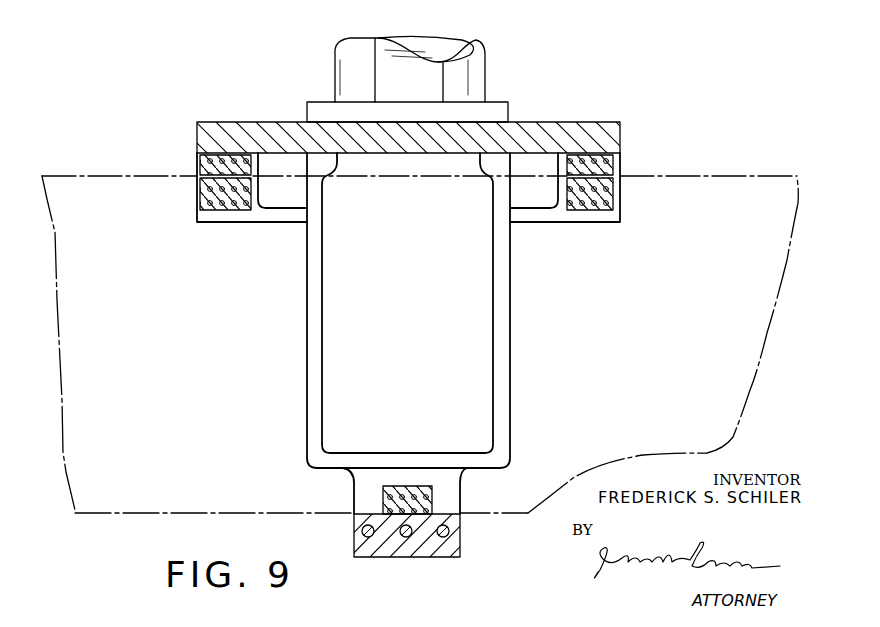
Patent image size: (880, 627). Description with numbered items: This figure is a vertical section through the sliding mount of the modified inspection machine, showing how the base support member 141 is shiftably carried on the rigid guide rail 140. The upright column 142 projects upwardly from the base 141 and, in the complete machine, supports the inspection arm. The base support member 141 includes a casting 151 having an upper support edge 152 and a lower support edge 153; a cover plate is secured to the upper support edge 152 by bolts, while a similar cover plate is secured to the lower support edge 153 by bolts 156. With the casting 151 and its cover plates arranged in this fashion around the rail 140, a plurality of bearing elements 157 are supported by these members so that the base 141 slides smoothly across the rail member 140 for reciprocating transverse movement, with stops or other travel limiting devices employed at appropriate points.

The guide rail 140 is at (745, 402).
The base support member 141 is at (516, 396).
The upright column 142 is at (486, 76).
The casting 151 is at (511, 320).
The upper support edge 152 is at (198, 164).
The lower support edge 153 is at (354, 527).
The bolts 156 is at (406, 538).
The bearing elements 157 is at (203, 168).